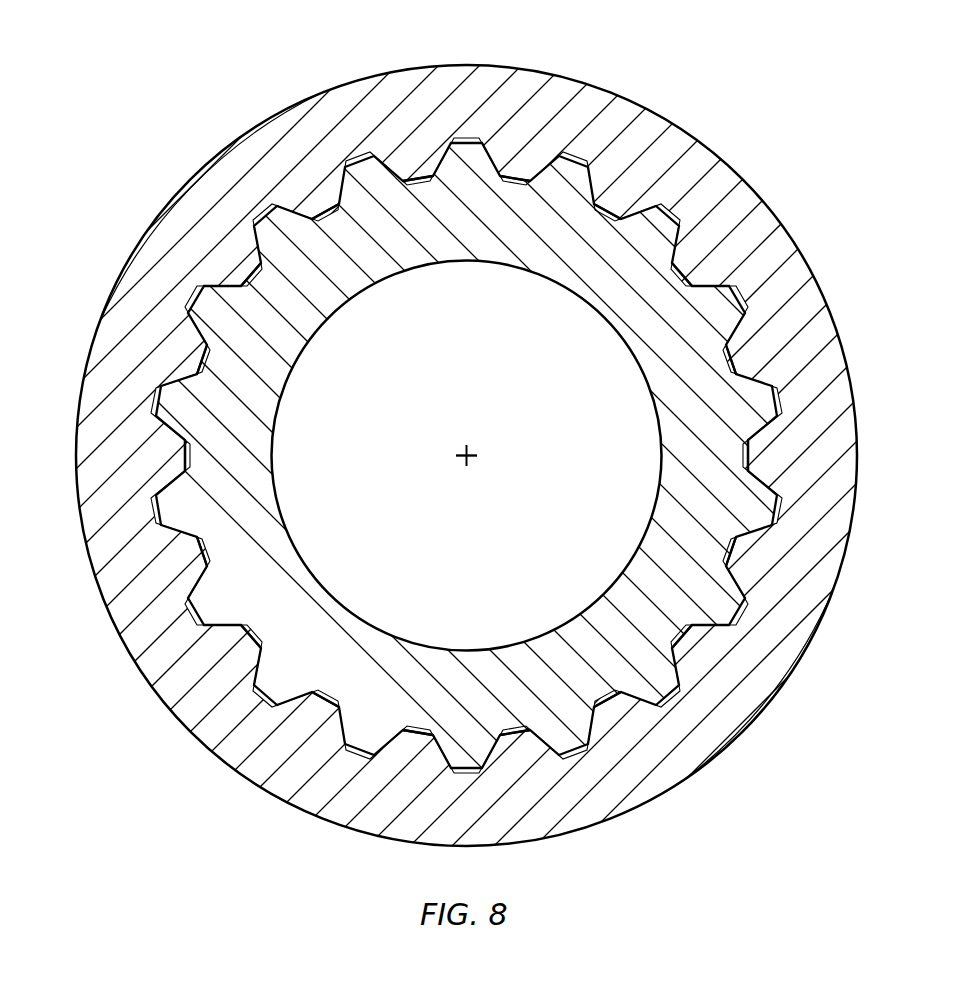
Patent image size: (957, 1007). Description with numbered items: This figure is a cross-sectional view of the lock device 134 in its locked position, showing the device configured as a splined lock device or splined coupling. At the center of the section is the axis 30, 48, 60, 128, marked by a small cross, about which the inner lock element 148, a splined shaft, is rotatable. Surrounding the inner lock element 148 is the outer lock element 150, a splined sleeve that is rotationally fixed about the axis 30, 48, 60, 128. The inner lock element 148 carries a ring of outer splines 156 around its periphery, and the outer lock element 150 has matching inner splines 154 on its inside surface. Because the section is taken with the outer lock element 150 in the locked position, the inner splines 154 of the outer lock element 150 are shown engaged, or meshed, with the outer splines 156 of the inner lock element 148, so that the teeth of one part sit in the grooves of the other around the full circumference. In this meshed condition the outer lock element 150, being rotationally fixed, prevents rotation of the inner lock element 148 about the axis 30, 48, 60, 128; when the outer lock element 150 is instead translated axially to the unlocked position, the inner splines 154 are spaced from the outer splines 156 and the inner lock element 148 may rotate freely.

The lock device 134 is at (478, 447).
The outer lock element 150 is at (808, 267).
The outer splines 156 is at (737, 290).
The inner splines 154 is at (687, 283).
The inner lock element 148 is at (637, 357).
The axis 30 is at (468, 460).
The axis 60 is at (475, 494).
The axis 48 is at (475, 494).
The axis 128 is at (475, 494).